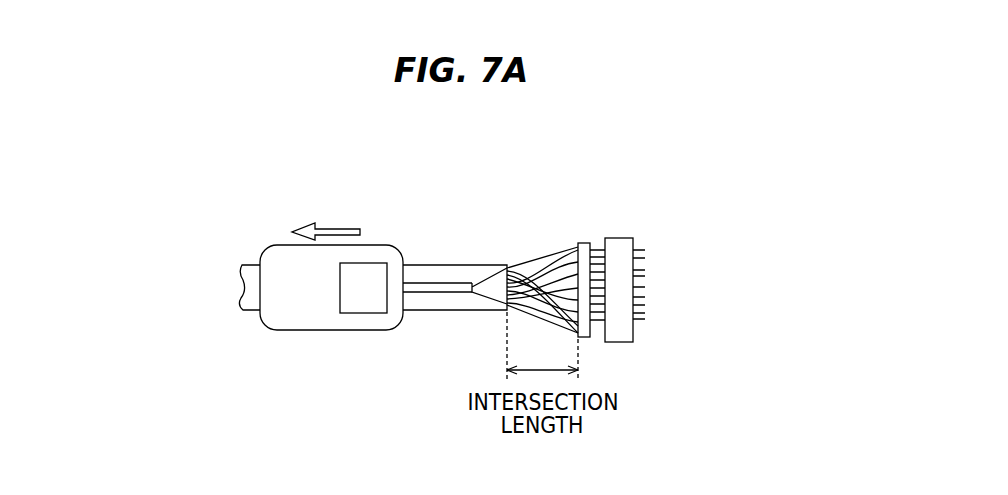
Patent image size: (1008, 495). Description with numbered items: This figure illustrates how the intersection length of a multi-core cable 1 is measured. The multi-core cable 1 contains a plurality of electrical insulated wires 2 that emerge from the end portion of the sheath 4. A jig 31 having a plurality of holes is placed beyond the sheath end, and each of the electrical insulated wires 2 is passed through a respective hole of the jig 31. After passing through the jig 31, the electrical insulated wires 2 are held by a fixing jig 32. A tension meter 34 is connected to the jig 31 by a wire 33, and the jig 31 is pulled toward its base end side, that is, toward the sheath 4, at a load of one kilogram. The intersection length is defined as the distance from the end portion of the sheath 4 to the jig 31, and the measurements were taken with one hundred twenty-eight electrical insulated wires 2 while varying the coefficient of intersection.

The multi-core cable 1 is at (236, 260).
The electrical insulated wires 2 is at (567, 243).
The sheath 4 is at (459, 272).
The jig 31 is at (583, 243).
The fixing jig 32 is at (620, 238).
The wire 33 is at (547, 257).
The tension meter 34 is at (335, 330).